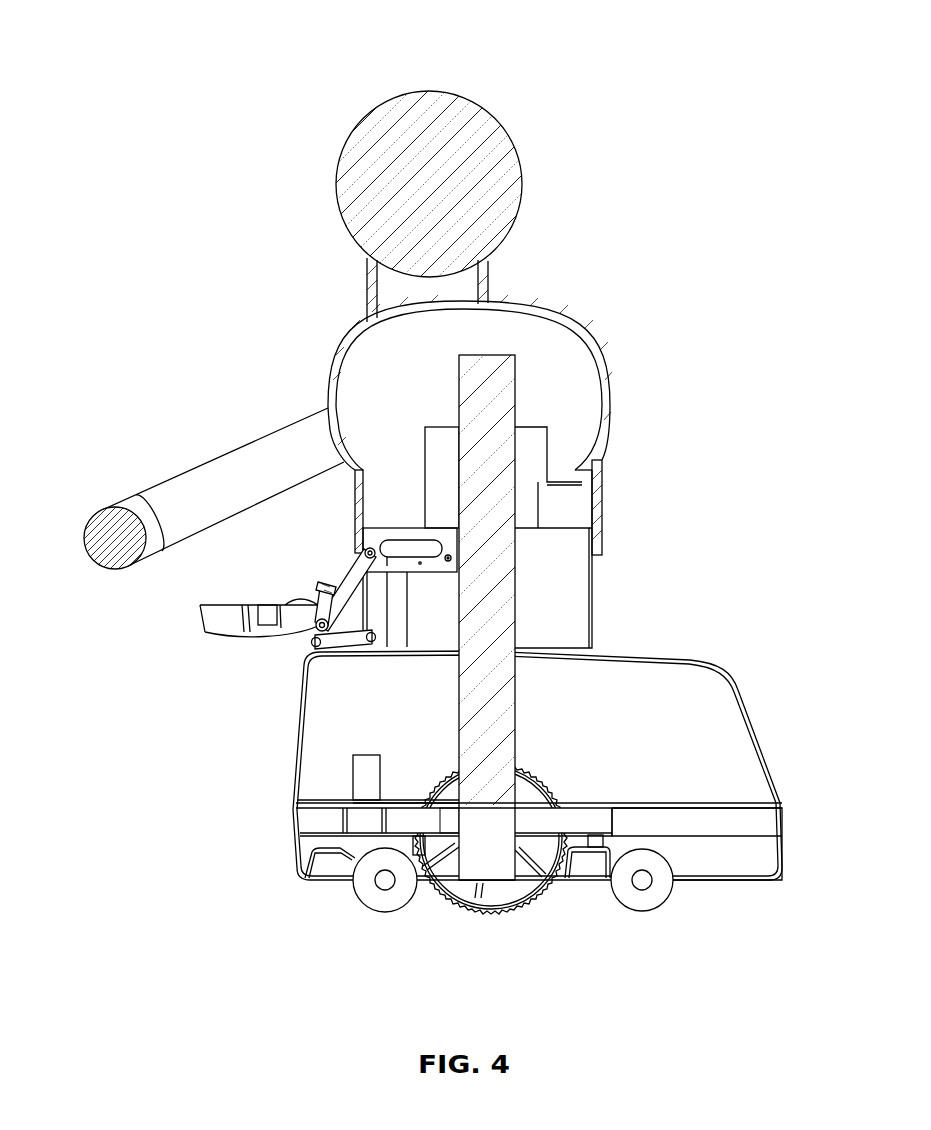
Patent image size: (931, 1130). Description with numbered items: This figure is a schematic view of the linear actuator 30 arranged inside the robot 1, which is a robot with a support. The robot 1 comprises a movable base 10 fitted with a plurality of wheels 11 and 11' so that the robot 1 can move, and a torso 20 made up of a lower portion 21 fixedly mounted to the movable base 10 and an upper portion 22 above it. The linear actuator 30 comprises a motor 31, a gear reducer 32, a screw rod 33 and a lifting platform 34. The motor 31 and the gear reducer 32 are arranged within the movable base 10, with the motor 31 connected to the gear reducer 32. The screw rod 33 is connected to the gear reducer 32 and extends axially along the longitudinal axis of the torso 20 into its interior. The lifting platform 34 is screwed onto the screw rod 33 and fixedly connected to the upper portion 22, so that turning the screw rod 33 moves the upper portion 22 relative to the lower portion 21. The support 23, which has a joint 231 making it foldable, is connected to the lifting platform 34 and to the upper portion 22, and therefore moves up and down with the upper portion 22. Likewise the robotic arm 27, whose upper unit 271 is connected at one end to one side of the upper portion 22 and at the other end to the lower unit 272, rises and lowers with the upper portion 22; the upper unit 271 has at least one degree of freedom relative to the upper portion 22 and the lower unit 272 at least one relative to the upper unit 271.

The robot 1 is at (686, 128).
The movable base 10 is at (760, 843).
The wheel 11 is at (493, 864).
The wheel 11' is at (522, 912).
The torso 20 is at (632, 340).
The lower portion 21 is at (582, 598).
The upper portion 22 is at (545, 343).
The support 23 is at (233, 628).
The joint 231 is at (298, 598).
The robotic arm 27 is at (222, 418).
The upper unit 271 is at (228, 480).
The lower unit 272 is at (145, 513).
The linear actuator 30 is at (356, 722).
The motor 31 is at (360, 768).
The gear reducer 32 is at (453, 818).
The screw rod 33 is at (503, 707).
The lifting platform 34 is at (535, 452).